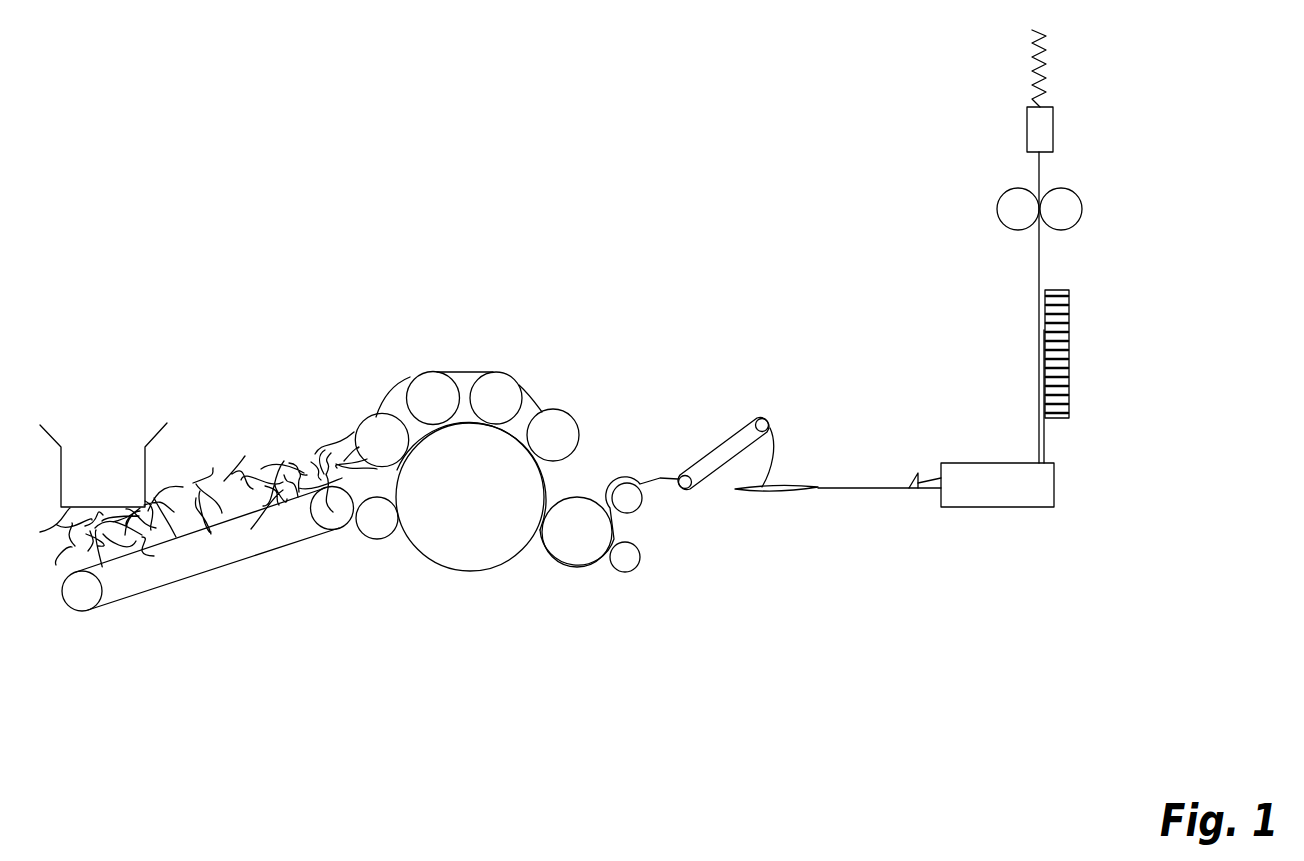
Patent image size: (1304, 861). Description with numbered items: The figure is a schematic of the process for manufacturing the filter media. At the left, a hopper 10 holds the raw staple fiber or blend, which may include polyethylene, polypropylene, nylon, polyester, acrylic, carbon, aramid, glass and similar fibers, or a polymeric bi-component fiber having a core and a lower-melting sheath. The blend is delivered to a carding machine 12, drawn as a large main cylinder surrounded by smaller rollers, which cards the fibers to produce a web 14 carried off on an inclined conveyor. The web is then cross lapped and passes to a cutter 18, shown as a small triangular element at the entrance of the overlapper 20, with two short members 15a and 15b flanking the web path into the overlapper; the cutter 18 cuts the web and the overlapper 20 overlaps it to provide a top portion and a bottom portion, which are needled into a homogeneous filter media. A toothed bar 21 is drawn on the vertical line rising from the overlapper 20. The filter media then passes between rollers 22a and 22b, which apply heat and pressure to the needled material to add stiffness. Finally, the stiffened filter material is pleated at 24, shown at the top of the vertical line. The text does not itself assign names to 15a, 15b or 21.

The hopper 10 is at (167, 424).
The carding machine 12 is at (477, 336).
The web 14 is at (735, 418).
The upper guide member 15a is at (925, 480).
The lower guide member 15b is at (920, 492).
The cutter 18 is at (909, 486).
The overlapper 20 is at (1012, 508).
The toothed rack 21 is at (1040, 325).
The roller 22a is at (996, 210).
The roller 22b is at (1083, 208).
The pleating station 24 is at (1027, 120).